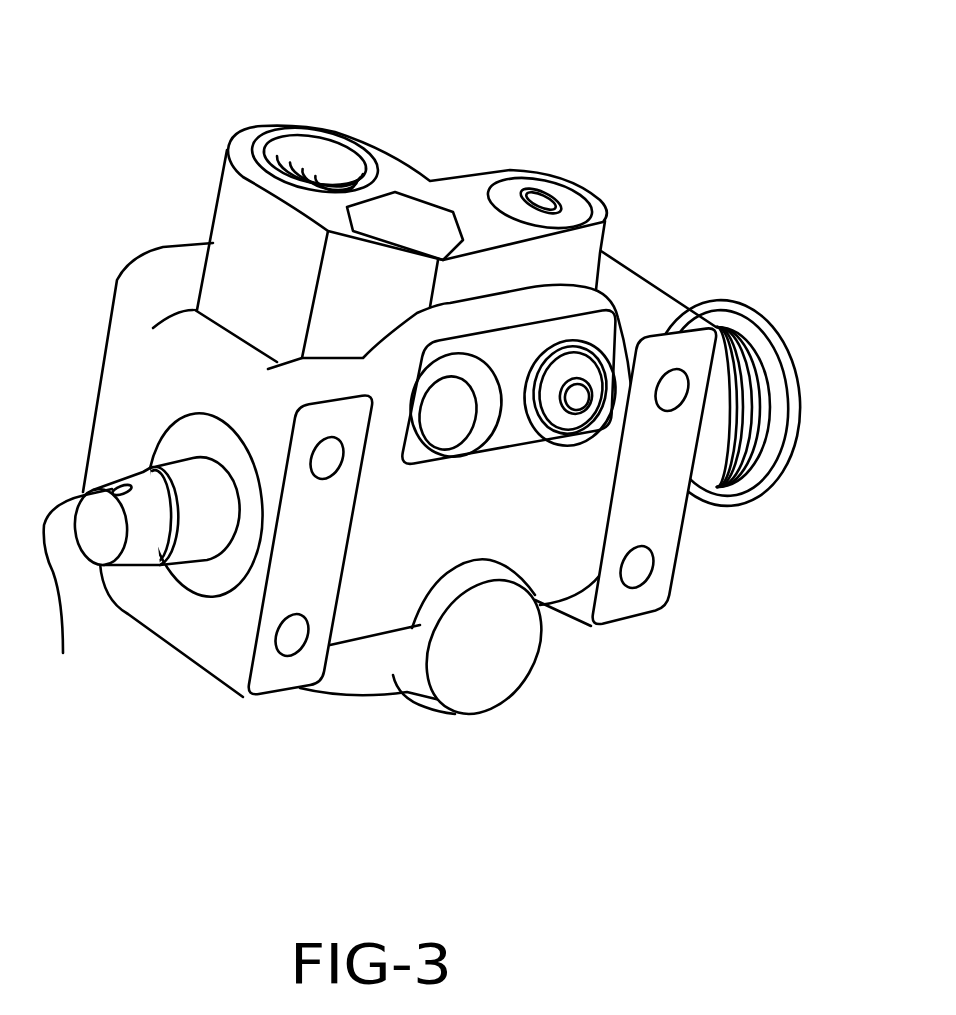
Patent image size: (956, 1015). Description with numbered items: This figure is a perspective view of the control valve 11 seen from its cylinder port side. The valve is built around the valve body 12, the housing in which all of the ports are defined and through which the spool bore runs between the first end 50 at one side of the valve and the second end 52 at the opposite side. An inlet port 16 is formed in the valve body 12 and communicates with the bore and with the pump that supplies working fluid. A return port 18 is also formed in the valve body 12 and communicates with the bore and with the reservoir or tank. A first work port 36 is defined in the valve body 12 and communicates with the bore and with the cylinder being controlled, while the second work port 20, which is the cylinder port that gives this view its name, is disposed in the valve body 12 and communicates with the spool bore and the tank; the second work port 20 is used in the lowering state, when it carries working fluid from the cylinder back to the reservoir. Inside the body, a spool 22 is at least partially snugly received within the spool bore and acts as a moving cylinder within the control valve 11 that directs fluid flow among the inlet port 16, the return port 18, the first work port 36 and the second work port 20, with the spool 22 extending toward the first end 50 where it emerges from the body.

The control valve 11 is at (663, 116).
The valve body 12 is at (617, 268).
The inlet port 16 is at (336, 716).
The return port 18 is at (282, 146).
The second work port 20 is at (443, 408).
The spool 22 is at (76, 587).
The first work port 36 is at (530, 138).
The first end 50 is at (163, 412).
The second end 52 is at (737, 307).